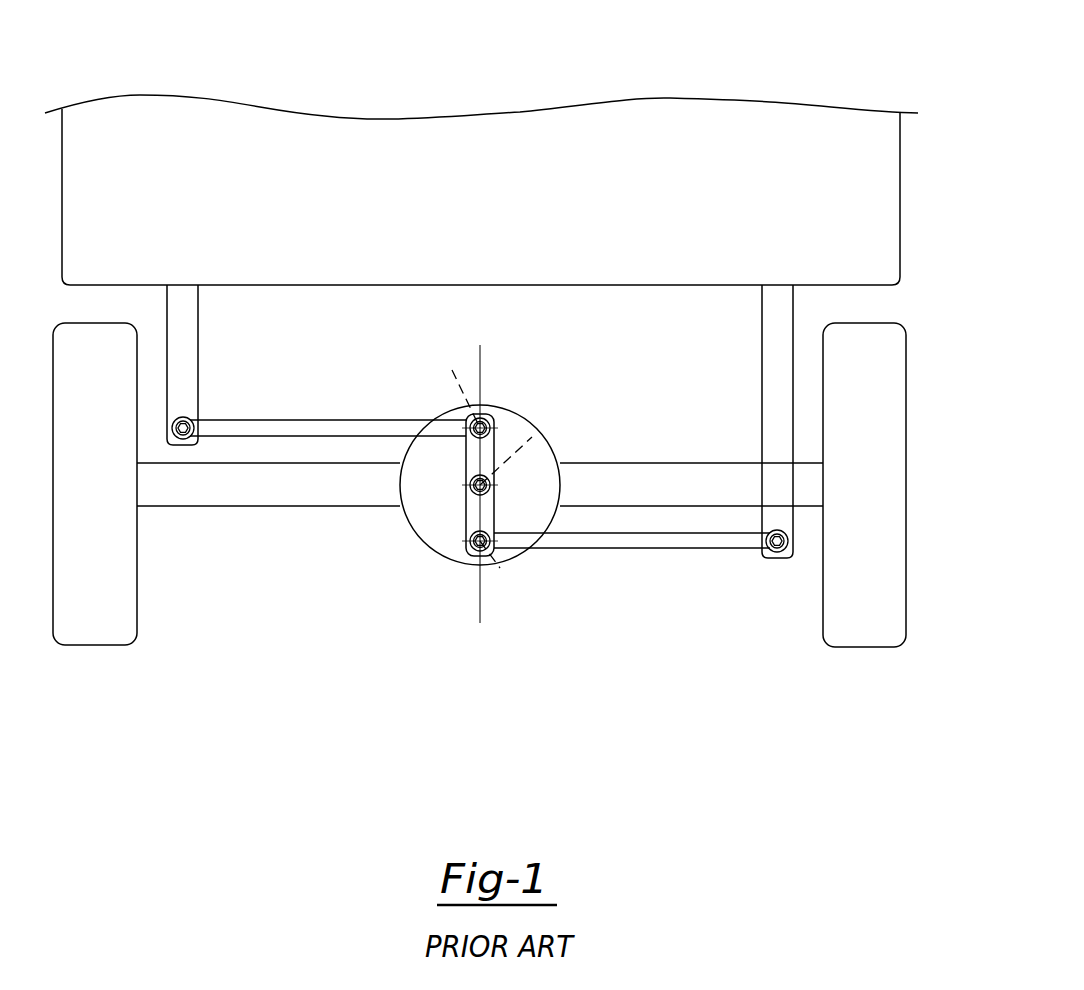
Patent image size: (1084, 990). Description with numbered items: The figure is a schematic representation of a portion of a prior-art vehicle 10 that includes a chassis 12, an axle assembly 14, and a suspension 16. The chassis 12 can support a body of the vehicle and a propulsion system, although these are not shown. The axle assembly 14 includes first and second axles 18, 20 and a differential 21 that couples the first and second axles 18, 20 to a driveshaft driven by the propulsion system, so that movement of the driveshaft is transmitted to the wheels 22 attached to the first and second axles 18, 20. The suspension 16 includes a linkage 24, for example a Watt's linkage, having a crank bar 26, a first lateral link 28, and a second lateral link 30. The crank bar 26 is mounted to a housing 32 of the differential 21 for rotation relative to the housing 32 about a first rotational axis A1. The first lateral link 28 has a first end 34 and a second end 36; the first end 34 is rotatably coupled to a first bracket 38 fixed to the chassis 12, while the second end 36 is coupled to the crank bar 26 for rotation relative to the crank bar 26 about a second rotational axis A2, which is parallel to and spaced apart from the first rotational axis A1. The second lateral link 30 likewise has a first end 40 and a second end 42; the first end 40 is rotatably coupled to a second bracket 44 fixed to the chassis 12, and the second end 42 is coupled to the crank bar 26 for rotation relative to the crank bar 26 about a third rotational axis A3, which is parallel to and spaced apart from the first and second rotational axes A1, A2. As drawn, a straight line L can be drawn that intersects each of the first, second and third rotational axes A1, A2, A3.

The vehicle 10 is at (308, 68).
The chassis 12 is at (870, 188).
The axle assembly 14 is at (326, 510).
The suspension 16 is at (678, 553).
The first axle 18 is at (248, 497).
The second axle 20 is at (684, 470).
The differential 21 is at (516, 410).
The wheels 22 is at (893, 383).
The linkage 24 is at (622, 553).
The crank bar 26 is at (470, 515).
The first lateral link 28 is at (303, 432).
The second lateral link 30 is at (556, 548).
The housing 32 is at (427, 509).
The first end 34 is at (192, 425).
The second end 36 is at (462, 428).
The first bracket 38 is at (187, 300).
The first end 40 is at (762, 542).
The second end 42 is at (495, 537).
The second bracket 44 is at (772, 323).
The first rotational axis A1 is at (545, 427).
The second rotational axis A2 is at (455, 372).
The third rotational axis A3 is at (503, 575).
The straight line L is at (480, 598).